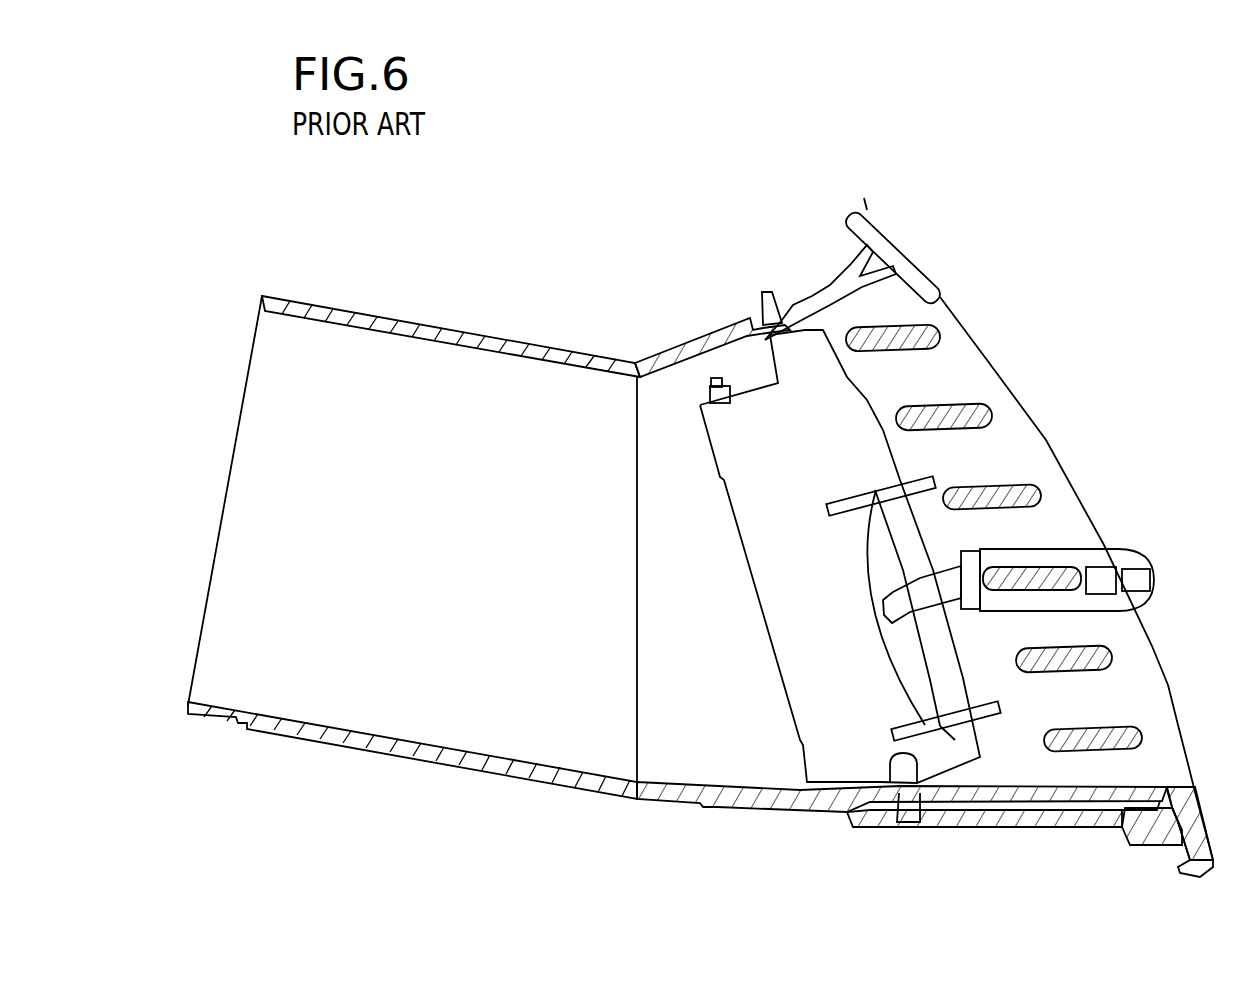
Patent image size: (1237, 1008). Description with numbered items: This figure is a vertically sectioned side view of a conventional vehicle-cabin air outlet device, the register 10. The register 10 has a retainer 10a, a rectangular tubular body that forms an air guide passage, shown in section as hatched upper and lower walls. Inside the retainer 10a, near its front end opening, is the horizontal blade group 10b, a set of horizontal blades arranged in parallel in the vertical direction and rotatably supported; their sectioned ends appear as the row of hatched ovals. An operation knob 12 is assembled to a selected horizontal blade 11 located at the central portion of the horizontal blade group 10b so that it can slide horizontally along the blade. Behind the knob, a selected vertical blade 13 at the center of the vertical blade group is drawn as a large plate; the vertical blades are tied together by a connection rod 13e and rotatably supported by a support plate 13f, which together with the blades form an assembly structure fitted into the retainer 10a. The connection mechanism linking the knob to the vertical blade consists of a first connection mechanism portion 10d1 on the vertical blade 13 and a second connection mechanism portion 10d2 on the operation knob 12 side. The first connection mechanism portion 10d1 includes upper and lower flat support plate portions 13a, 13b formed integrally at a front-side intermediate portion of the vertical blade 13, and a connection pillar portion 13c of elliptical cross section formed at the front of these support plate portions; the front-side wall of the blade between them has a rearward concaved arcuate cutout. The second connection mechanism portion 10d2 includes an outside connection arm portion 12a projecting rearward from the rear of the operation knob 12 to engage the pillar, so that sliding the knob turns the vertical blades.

The register 10 is at (437, 308).
The retainer 10a is at (582, 343).
The horizontal blade group 10b is at (952, 397).
The first connection mechanism portion 10d1 is at (965, 658).
The second connection mechanism portion 10d2 is at (876, 625).
The horizontal blade 11 is at (1048, 555).
The operation knob 12 is at (1149, 599).
The outside connection arm portion 12a is at (900, 595).
The vertical blade 13 is at (737, 521).
The upper support plate portion 13a is at (912, 483).
The lower support plate portion 13b is at (985, 713).
The connection pillar portion 13c is at (917, 553).
The connection rod 13e is at (697, 402).
The support plate 13f is at (968, 795).